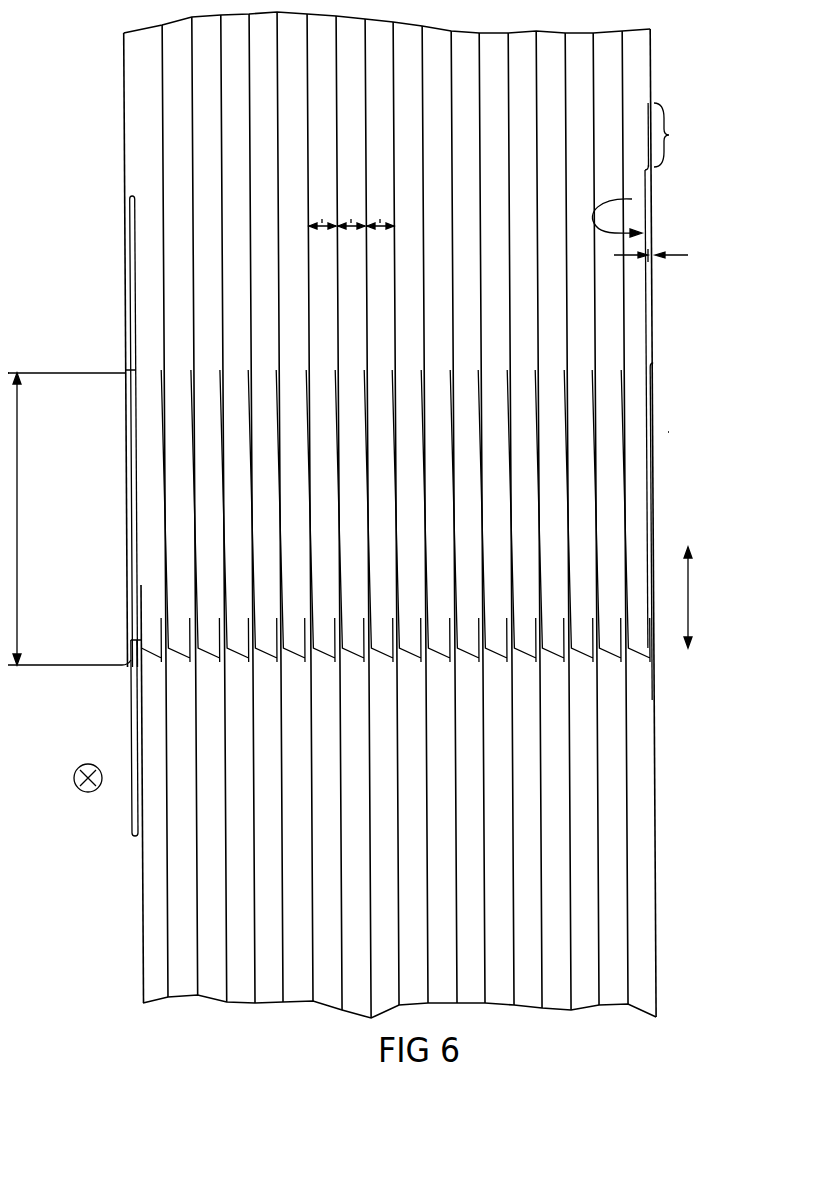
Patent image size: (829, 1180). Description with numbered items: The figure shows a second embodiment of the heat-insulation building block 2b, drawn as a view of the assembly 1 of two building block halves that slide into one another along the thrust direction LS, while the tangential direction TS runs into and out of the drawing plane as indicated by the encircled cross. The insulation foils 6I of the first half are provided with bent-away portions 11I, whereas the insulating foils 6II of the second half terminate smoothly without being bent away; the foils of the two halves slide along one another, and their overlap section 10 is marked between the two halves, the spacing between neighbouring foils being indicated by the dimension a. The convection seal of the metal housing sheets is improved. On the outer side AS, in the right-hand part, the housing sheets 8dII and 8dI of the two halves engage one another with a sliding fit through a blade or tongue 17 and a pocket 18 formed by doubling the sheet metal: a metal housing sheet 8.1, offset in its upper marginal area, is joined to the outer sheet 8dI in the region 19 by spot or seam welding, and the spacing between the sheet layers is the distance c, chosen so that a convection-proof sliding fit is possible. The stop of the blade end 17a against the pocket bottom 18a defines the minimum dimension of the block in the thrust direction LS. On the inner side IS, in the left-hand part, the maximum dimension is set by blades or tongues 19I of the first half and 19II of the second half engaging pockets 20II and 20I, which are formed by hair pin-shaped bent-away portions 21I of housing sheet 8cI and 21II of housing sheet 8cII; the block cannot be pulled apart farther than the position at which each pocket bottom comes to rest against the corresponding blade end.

The slat panel 1 is at (489, 45).
The building block 2b is at (598, 913).
The insulation foils 6I is at (478, 158).
The insulating foils 6II is at (397, 880).
The metal housing sheet 8cI is at (125, 235).
The metal housing sheet 8cII is at (142, 890).
The housing sheet 8dI is at (655, 238).
The housing sheet 8dII is at (656, 870).
The metal housing sheet 8.1 is at (632, 199).
The overlap section 10 is at (69, 519).
The bent-away portions 11I is at (383, 665).
The blade or tongue 17 is at (654, 378).
The blade or tongue end 17a is at (653, 366).
The pocket 18 is at (654, 285).
The pocket bottom 18a is at (649, 167).
The region 19 is at (667, 135).
The metal housing sheet blade or tongue 19I is at (130, 372).
The metal housing sheet blade or tongue 19II is at (131, 667).
The pocket 20I is at (133, 710).
The pocket 20II is at (135, 281).
The hair pin-shaped bent-away portion 21I is at (135, 837).
The hair pin-shaped bent-away portion 21II is at (148, 184).
The slat spacing a is at (351, 214).
The distance c is at (647, 258).
The inner side IS is at (59, 399).
The outer side AS is at (679, 420).
The thrust direction LS is at (701, 597).
The tangential direction TS is at (101, 779).